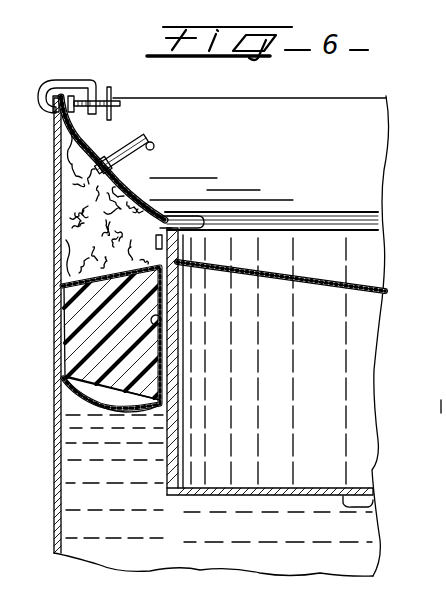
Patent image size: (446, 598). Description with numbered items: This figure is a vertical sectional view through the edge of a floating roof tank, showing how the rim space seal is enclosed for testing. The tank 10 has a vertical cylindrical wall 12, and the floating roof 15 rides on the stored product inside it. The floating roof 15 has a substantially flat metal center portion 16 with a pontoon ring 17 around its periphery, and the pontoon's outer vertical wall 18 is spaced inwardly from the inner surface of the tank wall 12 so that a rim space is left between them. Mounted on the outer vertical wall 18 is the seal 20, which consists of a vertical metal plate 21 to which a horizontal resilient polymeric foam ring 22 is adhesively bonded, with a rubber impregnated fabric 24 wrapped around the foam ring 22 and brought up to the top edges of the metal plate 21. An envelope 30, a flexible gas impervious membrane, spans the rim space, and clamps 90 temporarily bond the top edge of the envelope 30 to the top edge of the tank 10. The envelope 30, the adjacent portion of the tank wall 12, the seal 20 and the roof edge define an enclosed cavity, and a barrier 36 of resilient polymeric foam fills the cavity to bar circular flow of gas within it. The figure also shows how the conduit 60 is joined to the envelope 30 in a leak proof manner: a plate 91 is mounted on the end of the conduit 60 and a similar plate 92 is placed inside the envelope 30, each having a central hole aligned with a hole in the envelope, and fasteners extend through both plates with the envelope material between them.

The tank 10 is at (52, 283).
The tank wall 12 is at (52, 488).
The floating roof 15 is at (320, 266).
The center portion 16 is at (373, 505).
The pontoon ring 17 is at (364, 288).
The outer vertical wall 18 is at (178, 288).
The seal 20 is at (83, 332).
The vertical metal plate 21 is at (168, 320).
The resilient polymeric foam ring 22 is at (150, 366).
The rubber impregnated fabric 24 is at (73, 402).
The envelope 30 is at (152, 201).
The barrier 36 is at (100, 243).
The conduit 60 is at (145, 158).
The clamps 90 is at (68, 82).
The plate 91 is at (112, 162).
The plate 92 is at (106, 222).